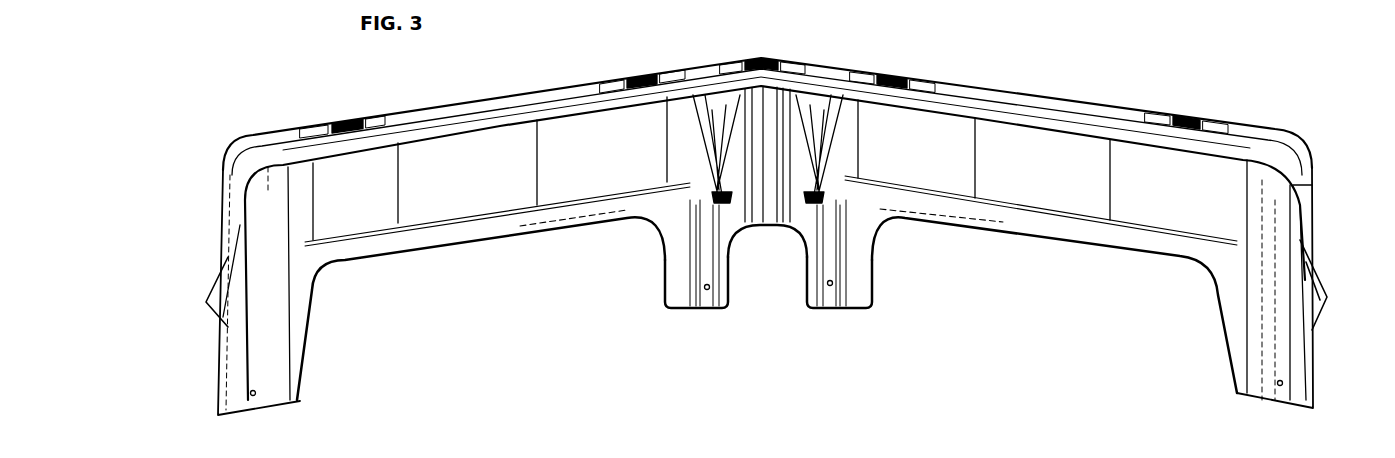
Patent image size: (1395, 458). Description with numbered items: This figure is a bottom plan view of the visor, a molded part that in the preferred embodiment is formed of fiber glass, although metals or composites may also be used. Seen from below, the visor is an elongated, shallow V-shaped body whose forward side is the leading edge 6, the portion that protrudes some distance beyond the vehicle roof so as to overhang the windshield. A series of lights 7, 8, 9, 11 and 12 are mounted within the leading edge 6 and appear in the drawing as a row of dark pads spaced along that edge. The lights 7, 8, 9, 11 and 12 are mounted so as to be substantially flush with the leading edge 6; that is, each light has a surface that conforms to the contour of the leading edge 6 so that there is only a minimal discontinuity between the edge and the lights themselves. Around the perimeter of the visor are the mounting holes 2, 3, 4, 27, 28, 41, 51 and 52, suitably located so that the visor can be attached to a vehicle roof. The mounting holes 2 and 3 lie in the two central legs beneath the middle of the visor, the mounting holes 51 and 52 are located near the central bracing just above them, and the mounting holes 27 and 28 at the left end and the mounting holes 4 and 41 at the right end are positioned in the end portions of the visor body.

The mounting hole 2 is at (708, 292).
The mounting hole 3 is at (829, 287).
The mounting hole 4 is at (1328, 306).
The mounting hole 41 is at (1284, 383).
The leading edge 6 is at (1088, 99).
The light 7 is at (350, 123).
The light 8 is at (640, 76).
The light 9 is at (778, 62).
The light 11 is at (887, 76).
The light 12 is at (1183, 117).
The mounting hole 27 is at (208, 297).
The mounting hole 28 is at (256, 395).
The mounting hole 51 is at (710, 210).
The mounting hole 52 is at (815, 205).